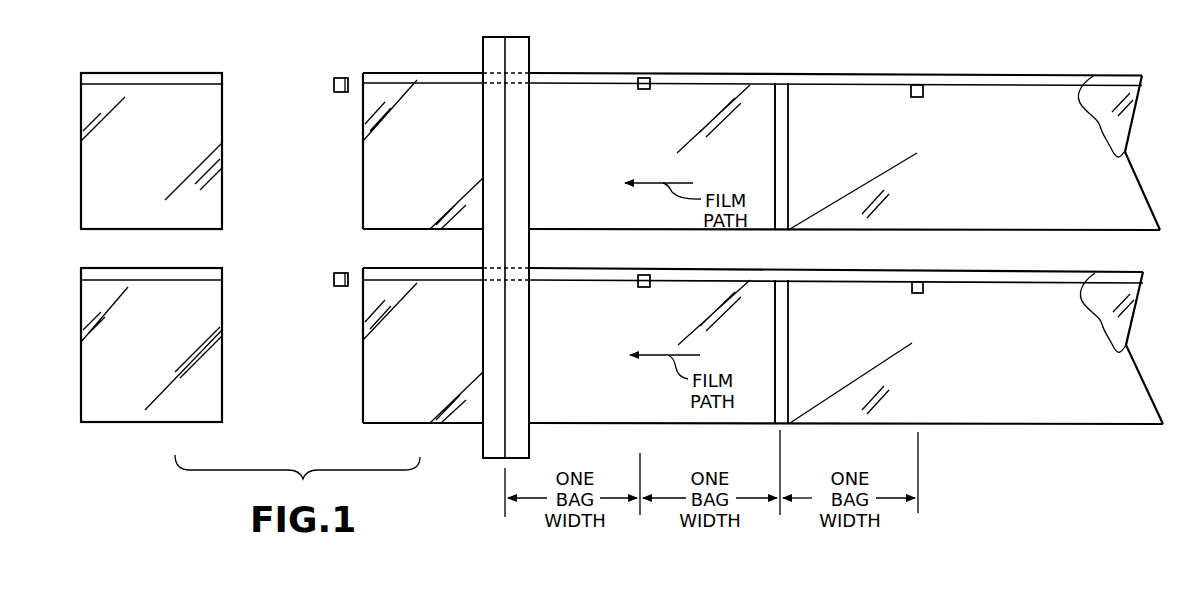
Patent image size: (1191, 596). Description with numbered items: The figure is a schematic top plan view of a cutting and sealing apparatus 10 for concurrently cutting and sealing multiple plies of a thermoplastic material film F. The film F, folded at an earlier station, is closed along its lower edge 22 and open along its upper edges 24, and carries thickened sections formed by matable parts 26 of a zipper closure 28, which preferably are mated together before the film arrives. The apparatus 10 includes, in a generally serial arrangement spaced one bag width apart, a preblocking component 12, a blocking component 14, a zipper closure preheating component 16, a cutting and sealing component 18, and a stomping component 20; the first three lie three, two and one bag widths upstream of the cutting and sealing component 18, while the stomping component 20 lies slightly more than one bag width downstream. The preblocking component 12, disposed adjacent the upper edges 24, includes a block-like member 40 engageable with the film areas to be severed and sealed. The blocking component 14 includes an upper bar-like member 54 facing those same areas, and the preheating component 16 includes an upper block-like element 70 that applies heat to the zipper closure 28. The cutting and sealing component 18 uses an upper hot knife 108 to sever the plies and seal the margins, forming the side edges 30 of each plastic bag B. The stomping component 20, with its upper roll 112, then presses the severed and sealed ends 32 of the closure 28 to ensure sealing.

The cutting and sealing apparatus 10 is at (870, 55).
The preblocking component 12 is at (926, 98).
The blocking component 14 is at (791, 182).
The zipper closure preheating component 16 is at (652, 91).
The cutting and sealing component 18 is at (532, 252).
The stomping component 20 is at (340, 95).
The lower edge 22 is at (190, 229).
The upper edges 24 is at (136, 73).
The matable parts 26 is at (1100, 100).
The zipper closure 28 is at (176, 90).
The side edges 30 is at (81, 198).
The ends 32 is at (81, 84).
The block-like member 40 is at (911, 89).
The upper bar-like member 54 is at (775, 160).
The upper block-like element 70 is at (636, 88).
The upper hot knife 108 is at (528, 373).
The upper roll 112 is at (334, 83).
The plastic bag B is at (88, 152).
The thermoplastic material film F is at (1132, 120).